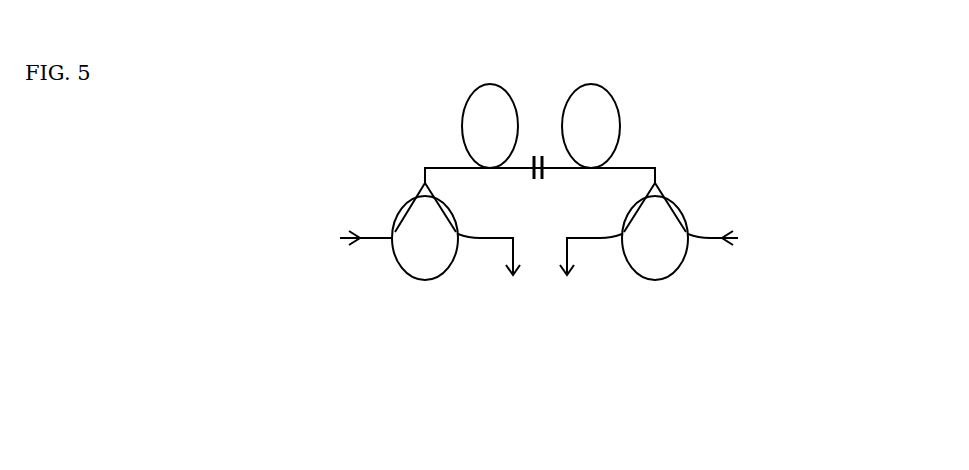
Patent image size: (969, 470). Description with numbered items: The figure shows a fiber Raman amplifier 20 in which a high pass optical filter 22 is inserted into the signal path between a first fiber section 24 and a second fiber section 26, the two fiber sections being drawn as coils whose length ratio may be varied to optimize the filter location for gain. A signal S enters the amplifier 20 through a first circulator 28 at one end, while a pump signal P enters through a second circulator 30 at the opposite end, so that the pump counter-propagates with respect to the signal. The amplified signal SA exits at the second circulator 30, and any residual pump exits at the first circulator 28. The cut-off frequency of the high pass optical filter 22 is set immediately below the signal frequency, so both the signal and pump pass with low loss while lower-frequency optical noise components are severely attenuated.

The fiber Raman amplifier 20 is at (50, 171).
The high pass optical filter 22 is at (537, 150).
The first fiber section 24 is at (611, 116).
The second fiber section 26 is at (467, 117).
The first circulator 28 is at (673, 212).
The second circulator 30 is at (400, 213).